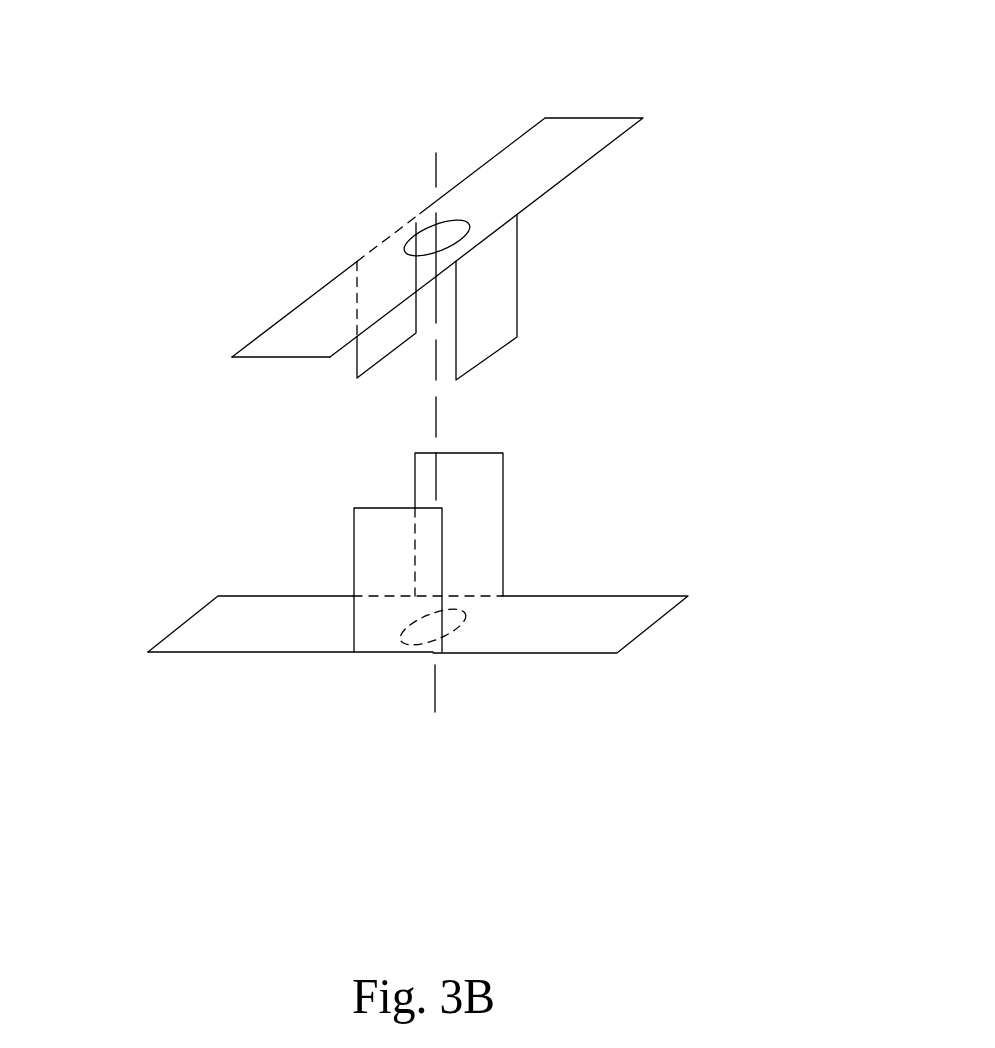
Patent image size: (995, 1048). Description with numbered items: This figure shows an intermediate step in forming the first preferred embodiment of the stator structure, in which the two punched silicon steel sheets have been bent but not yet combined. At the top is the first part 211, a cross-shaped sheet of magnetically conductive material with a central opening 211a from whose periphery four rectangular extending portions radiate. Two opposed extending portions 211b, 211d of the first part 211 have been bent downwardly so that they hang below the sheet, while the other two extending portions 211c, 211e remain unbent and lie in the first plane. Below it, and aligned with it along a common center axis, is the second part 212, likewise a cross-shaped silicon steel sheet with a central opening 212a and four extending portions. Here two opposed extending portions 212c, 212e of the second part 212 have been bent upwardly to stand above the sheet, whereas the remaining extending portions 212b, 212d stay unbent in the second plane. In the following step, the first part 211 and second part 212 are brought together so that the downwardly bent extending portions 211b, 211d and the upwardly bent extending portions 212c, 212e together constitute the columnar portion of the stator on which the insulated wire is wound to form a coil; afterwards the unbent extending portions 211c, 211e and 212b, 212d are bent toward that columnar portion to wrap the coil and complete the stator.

The first part 211 is at (343, 159).
The central opening 211a is at (431, 225).
The extending portion 211b is at (367, 347).
The extending portion 211c is at (297, 337).
The extending portion 211d is at (500, 313).
The extending portion 211e is at (535, 173).
The second part 212 is at (488, 694).
The central opening 212a is at (427, 643).
The extending portion 212b is at (223, 630).
The extending portion 212c is at (375, 537).
The extending portion 212d is at (613, 613).
The extending portion 212e is at (473, 523).